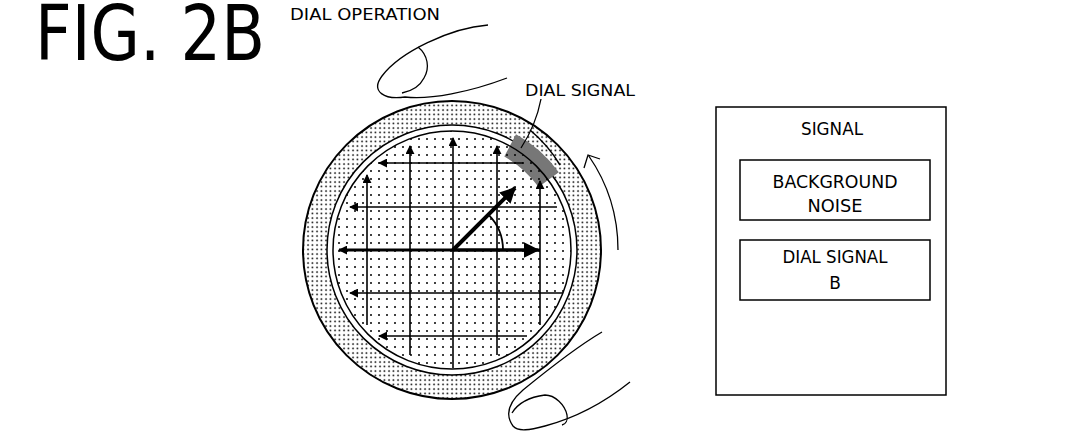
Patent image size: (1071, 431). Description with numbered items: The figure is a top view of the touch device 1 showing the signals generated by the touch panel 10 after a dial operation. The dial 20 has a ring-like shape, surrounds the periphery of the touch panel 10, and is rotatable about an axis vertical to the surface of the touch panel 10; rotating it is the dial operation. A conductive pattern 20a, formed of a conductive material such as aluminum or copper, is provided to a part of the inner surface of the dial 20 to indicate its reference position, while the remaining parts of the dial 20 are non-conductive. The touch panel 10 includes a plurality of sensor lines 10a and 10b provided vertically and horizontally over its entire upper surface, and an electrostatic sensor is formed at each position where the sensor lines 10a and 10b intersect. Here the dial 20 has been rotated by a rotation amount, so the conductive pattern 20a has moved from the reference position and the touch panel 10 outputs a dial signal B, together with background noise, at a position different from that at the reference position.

The touch device 1 is at (348, 125).
The dial 20 is at (332, 183).
The conductive pattern 20a is at (543, 153).
The touch panel 10 is at (412, 250).
The sensor lines 10a is at (388, 293).
The sensor lines 10b is at (385, 313).